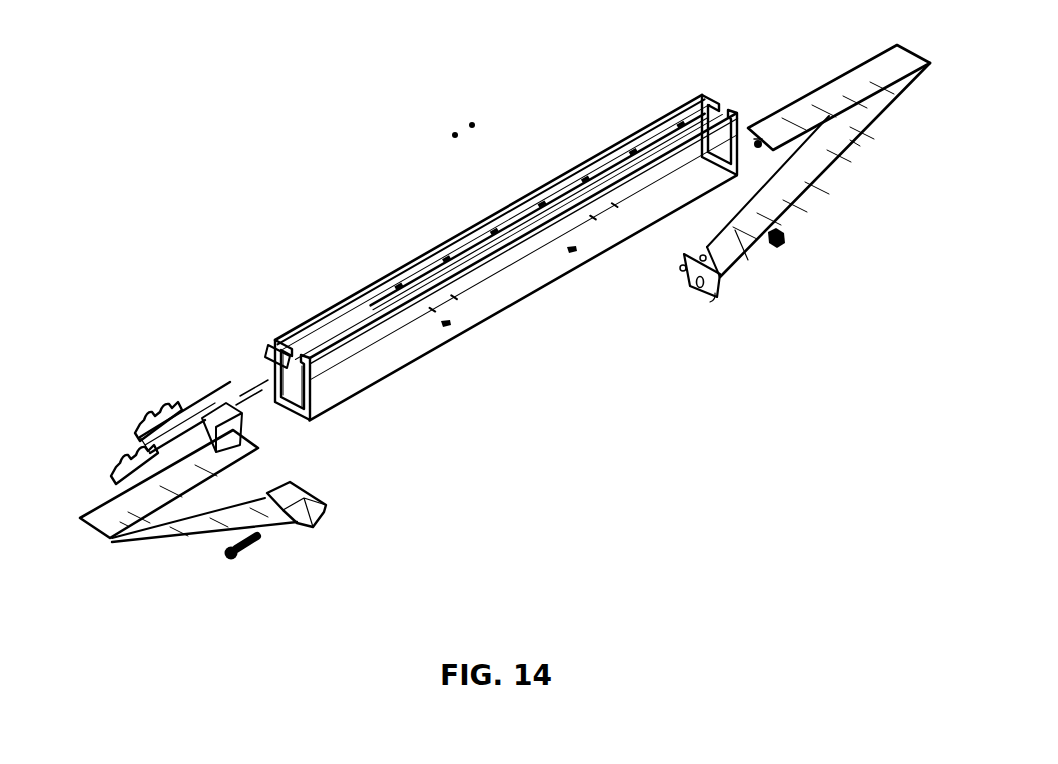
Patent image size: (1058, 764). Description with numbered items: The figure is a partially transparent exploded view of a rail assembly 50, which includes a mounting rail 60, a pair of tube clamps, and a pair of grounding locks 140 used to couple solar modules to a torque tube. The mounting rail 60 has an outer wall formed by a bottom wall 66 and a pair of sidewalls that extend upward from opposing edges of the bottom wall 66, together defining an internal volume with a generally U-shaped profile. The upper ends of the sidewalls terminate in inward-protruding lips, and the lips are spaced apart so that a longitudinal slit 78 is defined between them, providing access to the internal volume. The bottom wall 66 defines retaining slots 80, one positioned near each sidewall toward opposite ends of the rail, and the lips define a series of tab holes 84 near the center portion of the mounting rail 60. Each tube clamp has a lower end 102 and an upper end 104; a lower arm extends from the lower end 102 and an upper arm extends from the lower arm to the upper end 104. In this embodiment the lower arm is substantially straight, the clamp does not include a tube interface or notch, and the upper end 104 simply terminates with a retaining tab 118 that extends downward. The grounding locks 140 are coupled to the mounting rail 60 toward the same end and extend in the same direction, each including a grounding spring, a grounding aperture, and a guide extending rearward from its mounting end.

The rail assembly 50 is at (526, 105).
The mounting rail 60 is at (364, 291).
The bottom wall 66 is at (295, 400).
The slit 78 is at (658, 149).
The retaining slot 80 is at (572, 254).
The tab hole 84 is at (537, 223).
The lower end 102 is at (685, 281).
The upper end 104 is at (753, 101).
The retaining tab 118 is at (760, 148).
The grounding lock 140 is at (155, 402).